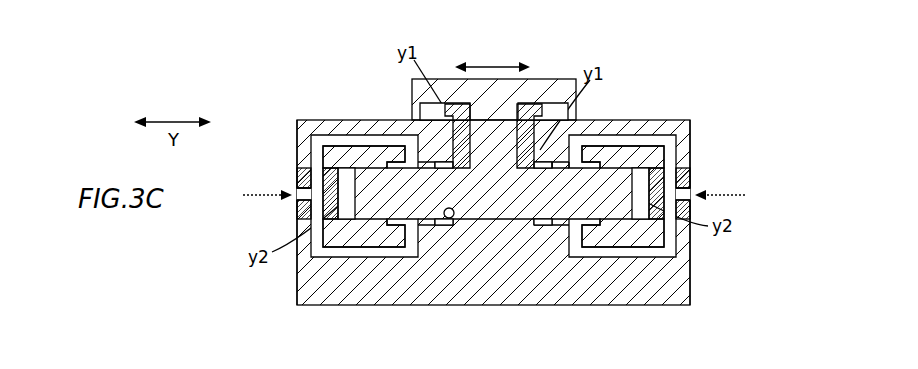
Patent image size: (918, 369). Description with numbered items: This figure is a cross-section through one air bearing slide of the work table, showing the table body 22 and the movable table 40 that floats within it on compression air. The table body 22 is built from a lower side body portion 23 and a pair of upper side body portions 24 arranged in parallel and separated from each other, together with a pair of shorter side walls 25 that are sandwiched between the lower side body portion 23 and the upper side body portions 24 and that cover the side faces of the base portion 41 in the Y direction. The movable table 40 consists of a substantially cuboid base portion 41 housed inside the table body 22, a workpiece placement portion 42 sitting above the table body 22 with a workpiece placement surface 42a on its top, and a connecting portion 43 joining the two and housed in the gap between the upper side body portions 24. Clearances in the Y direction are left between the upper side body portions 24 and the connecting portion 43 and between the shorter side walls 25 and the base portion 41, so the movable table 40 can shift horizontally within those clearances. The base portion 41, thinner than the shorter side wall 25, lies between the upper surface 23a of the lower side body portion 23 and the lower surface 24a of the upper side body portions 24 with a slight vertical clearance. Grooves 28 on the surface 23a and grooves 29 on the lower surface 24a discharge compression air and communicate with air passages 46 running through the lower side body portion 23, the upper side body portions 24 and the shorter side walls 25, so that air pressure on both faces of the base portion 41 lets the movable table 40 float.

The table body 22 is at (692, 303).
The lower side body portion 23 is at (675, 268).
The upper surface of the lower side body portion 23a is at (451, 218).
The upper side body portion 24 is at (303, 122).
The lower surface of the upper side body portion 24a is at (368, 165).
The shorter side wall 25 is at (300, 212).
The groove 28 is at (430, 232).
The groove 29 is at (379, 178).
The movable table 40 is at (628, 27).
The base portion 41 is at (570, 160).
The workpiece placement portion 42 is at (521, 112).
The workpiece placement surface 42a is at (478, 54).
The connecting portion 43 is at (550, 113).
The air passage 46 is at (317, 158).